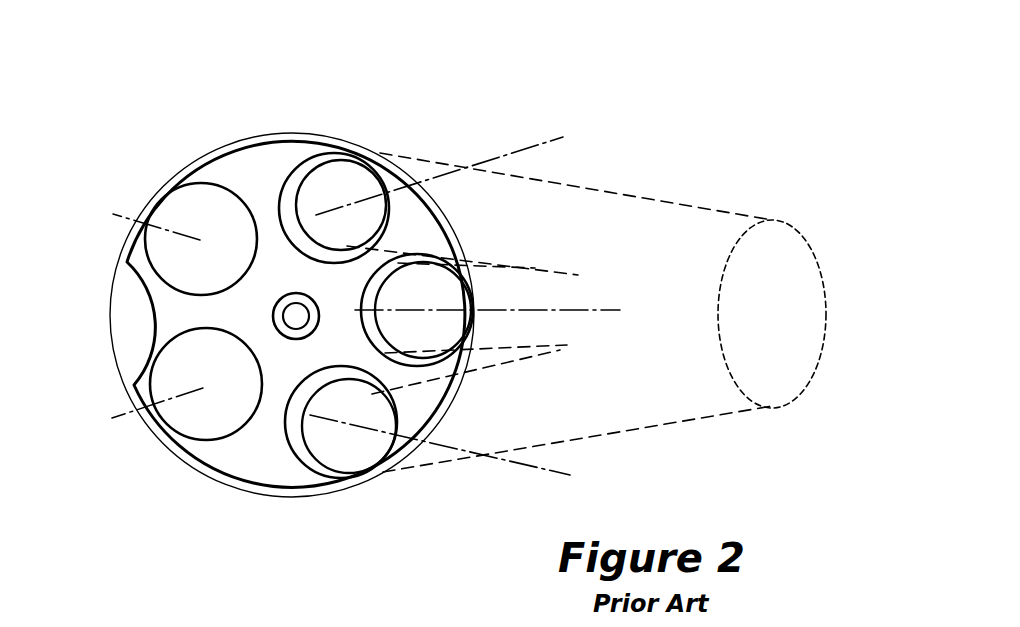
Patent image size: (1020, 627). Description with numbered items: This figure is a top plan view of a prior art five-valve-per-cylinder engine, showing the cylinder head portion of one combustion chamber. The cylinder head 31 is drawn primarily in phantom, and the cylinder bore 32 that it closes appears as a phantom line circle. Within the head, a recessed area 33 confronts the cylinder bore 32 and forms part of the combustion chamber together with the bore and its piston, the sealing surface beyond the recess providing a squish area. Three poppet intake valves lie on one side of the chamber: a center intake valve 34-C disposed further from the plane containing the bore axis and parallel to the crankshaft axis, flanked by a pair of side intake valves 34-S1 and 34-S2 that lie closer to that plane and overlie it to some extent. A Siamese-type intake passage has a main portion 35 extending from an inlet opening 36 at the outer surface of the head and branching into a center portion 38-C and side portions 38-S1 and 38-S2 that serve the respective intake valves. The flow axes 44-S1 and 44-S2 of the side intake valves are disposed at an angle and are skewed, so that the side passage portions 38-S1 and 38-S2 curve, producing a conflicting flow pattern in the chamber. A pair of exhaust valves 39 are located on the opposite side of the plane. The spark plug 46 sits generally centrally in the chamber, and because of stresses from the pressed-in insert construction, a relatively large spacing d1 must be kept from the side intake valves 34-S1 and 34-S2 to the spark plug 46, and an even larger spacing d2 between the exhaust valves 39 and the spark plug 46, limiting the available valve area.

The cylinder head 31 is at (134, 326).
The cylinder bore 32 is at (119, 272).
The recessed area 33 is at (206, 459).
The side intake valve 34-S1 is at (317, 158).
The center intake valve 34-C is at (367, 284).
The side intake valve 34-S2 is at (317, 470).
The intake passage main portion 35 is at (708, 217).
The inlet opening 36 is at (806, 264).
The intake passage side portion 38-S1 is at (420, 155).
The intake passage center portion 38-C is at (511, 347).
The intake passage side portion 38-S2 is at (445, 468).
The exhaust valve 39 is at (172, 205).
The flow axis 44-S1 is at (532, 148).
The flow axis 44-S2 is at (553, 467).
The spark plug 46 is at (277, 304).
The spacing d1 is at (305, 338).
The spacing d2 is at (276, 332).